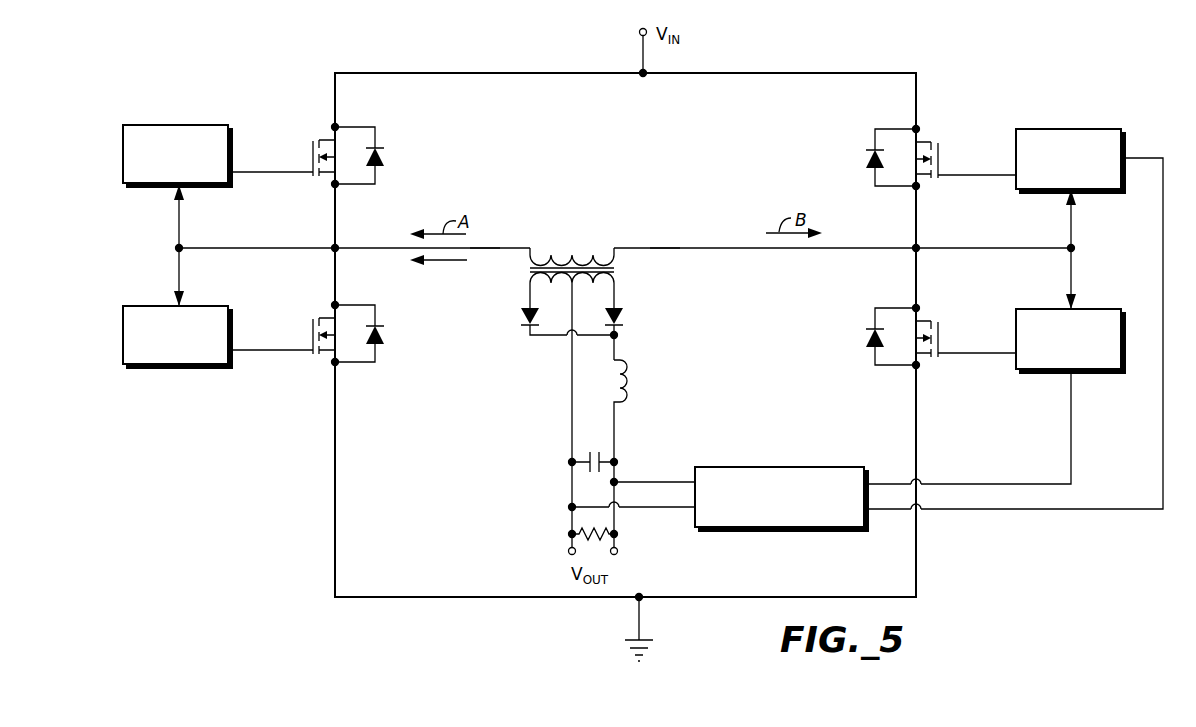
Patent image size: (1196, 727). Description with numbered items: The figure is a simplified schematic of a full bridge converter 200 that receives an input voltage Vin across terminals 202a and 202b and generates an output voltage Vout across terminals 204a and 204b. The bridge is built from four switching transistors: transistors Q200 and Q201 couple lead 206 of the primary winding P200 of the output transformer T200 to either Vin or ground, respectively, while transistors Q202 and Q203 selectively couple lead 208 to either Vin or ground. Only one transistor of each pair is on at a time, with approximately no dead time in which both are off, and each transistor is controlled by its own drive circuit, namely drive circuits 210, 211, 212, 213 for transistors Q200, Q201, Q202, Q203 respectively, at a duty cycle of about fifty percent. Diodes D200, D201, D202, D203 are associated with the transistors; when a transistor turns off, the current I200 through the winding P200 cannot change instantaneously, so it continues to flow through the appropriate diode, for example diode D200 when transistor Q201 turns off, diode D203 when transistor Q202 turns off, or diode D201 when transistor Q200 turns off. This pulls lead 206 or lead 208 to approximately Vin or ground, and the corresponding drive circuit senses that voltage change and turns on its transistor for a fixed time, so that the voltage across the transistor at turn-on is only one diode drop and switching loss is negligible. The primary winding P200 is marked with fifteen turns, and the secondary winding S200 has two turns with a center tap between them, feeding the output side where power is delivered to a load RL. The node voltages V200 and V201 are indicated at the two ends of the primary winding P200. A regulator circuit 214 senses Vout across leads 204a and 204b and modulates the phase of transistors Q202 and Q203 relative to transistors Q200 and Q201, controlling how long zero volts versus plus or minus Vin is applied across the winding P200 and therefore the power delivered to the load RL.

The full bridge converter 200 is at (1008, 63).
The input terminal 202a is at (640, 60).
The input terminal 202b is at (638, 630).
The output terminal 204a is at (571, 507).
The output terminal 204b is at (617, 533).
The lead of primary winding 206 is at (346, 248).
The lead of primary winding 208 is at (899, 248).
The drive circuit 210 is at (199, 125).
The drive circuit 211 is at (199, 306).
The drive circuit 212 is at (1094, 130).
The drive circuit 213 is at (1094, 310).
The regulator circuit 214 is at (800, 468).
The switching transistor Q200 is at (327, 138).
The switching transistor Q201 is at (327, 316).
The switching transistor Q202 is at (928, 141).
The switching transistor Q203 is at (928, 319).
The diode D200 is at (387, 161).
The diode D201 is at (387, 340).
The diode D202 is at (866, 162).
The diode D203 is at (866, 341).
The output transformer T200 is at (616, 270).
The primary winding P200 is at (592, 254).
The secondary winding S200 is at (616, 288).
The voltage node V200 is at (478, 249).
The voltage node V201 is at (663, 249).
The current I200 is at (442, 263).
The load RL is at (584, 533).